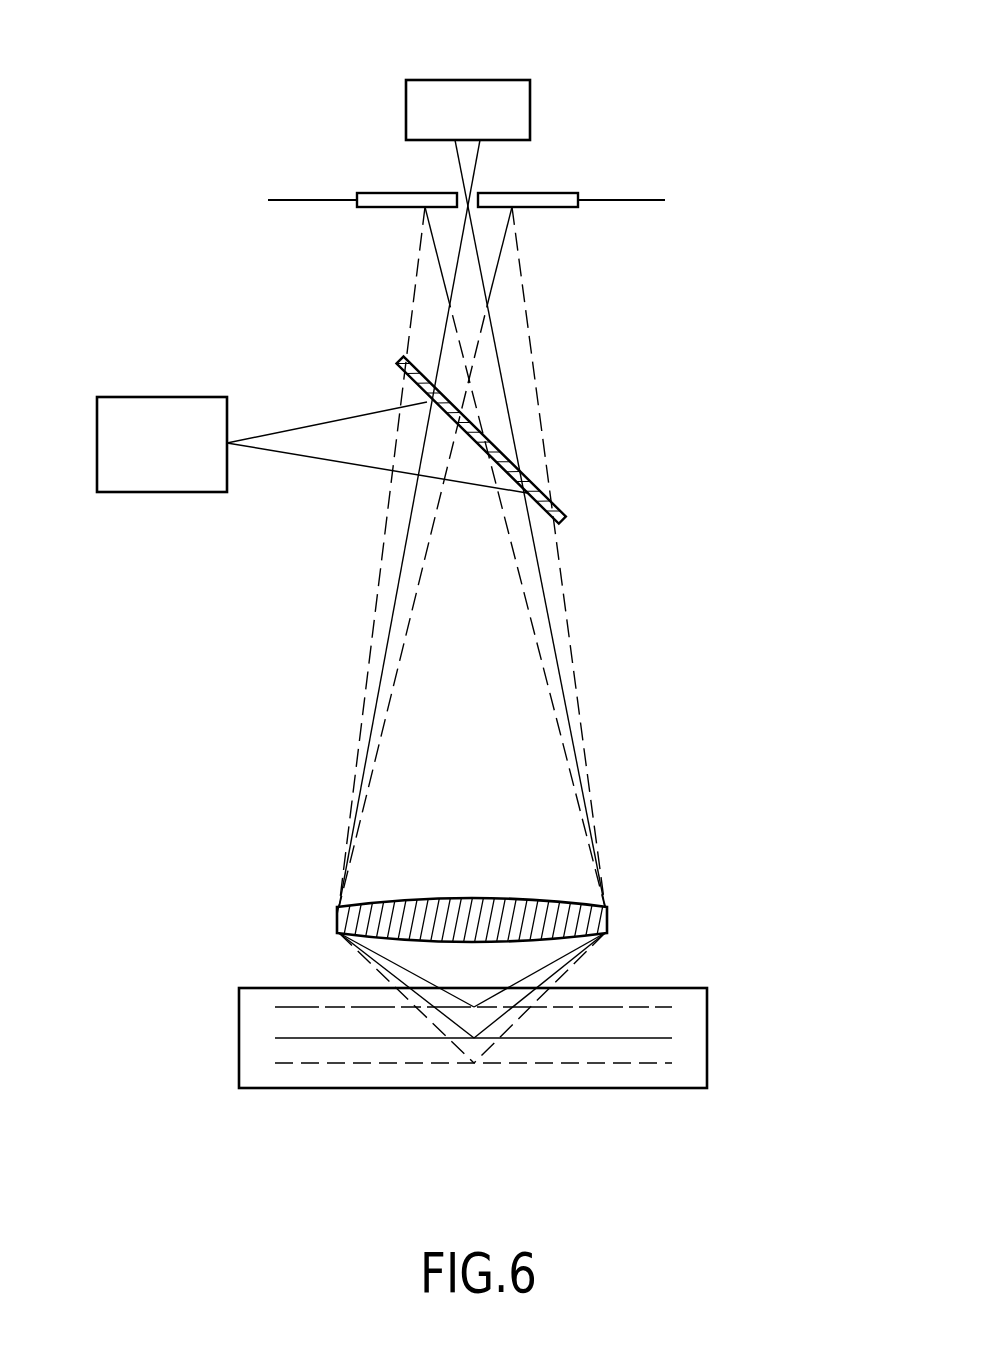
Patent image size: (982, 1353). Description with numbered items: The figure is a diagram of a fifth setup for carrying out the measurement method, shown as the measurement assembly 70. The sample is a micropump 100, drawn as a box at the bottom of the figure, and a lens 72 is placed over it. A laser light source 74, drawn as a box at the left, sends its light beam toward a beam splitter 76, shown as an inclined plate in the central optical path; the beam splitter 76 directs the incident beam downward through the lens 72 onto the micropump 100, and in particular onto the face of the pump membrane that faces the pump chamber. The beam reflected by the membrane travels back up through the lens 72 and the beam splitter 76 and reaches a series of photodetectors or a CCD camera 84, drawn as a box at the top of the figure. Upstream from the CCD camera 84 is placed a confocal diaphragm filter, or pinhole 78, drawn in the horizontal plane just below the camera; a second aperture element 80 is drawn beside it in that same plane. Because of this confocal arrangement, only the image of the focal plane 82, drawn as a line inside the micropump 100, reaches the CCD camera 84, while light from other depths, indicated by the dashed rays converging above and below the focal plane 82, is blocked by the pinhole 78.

The measurement assembly 70 is at (614, 422).
The lens 72 is at (438, 907).
The laser light source 74 is at (168, 475).
The beam splitter 76 is at (395, 368).
The confocal diaphragm filter 78 is at (383, 200).
The second slit aperture 80 is at (620, 200).
The focal plane 82 is at (652, 1036).
The CCD camera 84 is at (477, 98).
The micropump 100 is at (670, 975).